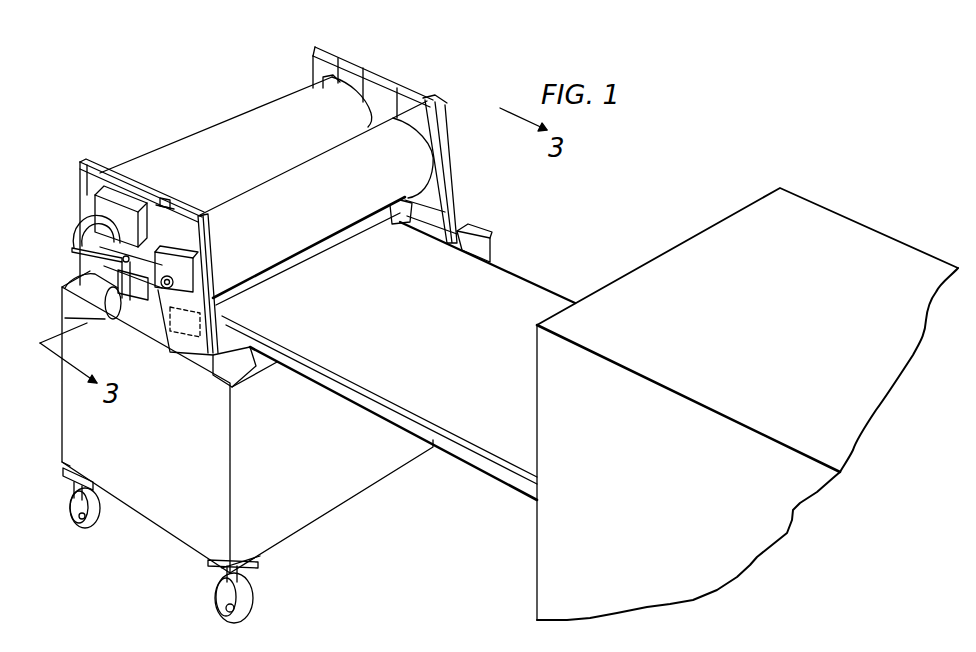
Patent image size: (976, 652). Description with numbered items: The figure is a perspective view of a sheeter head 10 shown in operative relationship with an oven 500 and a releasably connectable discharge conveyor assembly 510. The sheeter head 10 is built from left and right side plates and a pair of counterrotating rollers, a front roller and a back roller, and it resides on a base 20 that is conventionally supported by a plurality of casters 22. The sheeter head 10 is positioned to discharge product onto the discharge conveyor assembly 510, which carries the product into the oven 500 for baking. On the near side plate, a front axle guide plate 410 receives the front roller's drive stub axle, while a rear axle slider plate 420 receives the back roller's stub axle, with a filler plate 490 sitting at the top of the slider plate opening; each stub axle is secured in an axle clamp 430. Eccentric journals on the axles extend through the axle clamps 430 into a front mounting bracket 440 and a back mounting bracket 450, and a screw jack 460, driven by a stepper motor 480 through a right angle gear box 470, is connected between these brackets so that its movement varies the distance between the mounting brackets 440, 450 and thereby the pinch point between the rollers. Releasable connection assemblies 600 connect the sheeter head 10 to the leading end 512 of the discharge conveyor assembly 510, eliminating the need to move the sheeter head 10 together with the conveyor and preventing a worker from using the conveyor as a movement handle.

The sheeter head 10 is at (441, 82).
The base 20 is at (477, 242).
The casters 22 is at (97, 517).
The front axle guide plate 410 is at (205, 208).
The rear axle slider plate 420 is at (140, 182).
The axle clamp 430 is at (115, 217).
The front mounting bracket 440 is at (180, 333).
The back mounting bracket 450 is at (165, 203).
The screw jack 460 is at (168, 210).
The right angle gear box 470 is at (115, 303).
The stepper motor 480 is at (85, 297).
The filler plate 490 is at (115, 170).
The oven 500 is at (680, 270).
The discharge conveyor assembly 510 is at (517, 310).
The leading end 512 is at (250, 330).
The releasable connection assemblies 600 is at (237, 378).